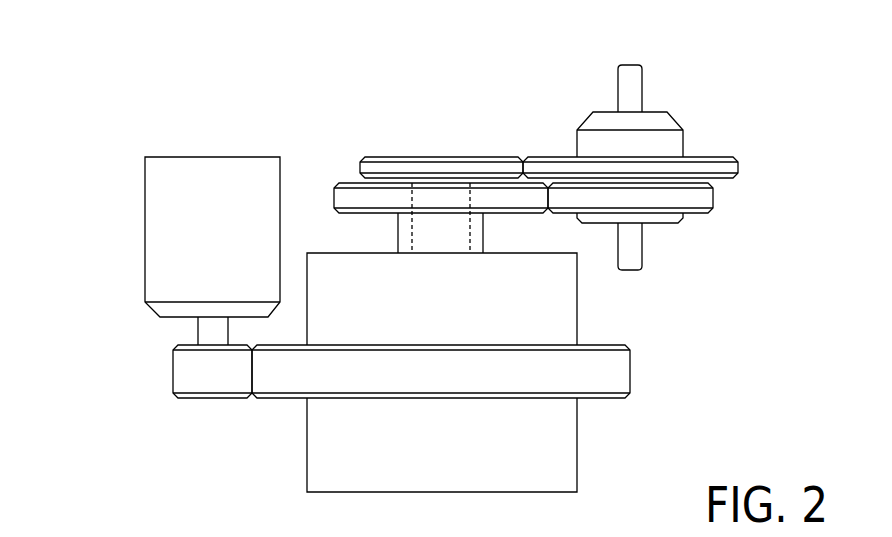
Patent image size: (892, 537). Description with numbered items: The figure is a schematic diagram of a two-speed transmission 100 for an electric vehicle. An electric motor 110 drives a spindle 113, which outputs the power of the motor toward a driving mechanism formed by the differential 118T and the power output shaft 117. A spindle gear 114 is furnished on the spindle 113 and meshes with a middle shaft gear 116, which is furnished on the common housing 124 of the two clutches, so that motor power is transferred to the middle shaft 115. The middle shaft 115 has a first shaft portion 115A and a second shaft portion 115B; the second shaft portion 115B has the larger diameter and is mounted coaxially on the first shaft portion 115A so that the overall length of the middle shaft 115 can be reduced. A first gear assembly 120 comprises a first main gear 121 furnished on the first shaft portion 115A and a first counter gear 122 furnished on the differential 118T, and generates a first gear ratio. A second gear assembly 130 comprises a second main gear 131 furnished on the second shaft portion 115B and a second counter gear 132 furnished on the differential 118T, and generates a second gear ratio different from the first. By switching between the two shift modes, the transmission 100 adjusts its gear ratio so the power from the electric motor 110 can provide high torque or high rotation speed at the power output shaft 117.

The two-speed transmission 100 is at (67, 37).
The electric motor 110 is at (177, 235).
The spindle 113 is at (210, 331).
The spindle gear 114 is at (185, 375).
The middle shaft gear 116 is at (280, 378).
The common housing 124 is at (335, 455).
The middle shaft 115 is at (413, 116).
The first shaft portion 115A is at (398, 220).
The second shaft portion 115B is at (398, 235).
The first gear assembly 120 is at (530, 116).
The first main gear 121 is at (452, 173).
The first counter gear 122 is at (535, 168).
The second gear assembly 130 is at (557, 54).
The second main gear 131 is at (427, 197).
The second counter gear 132 is at (570, 197).
The differential 118T is at (655, 122).
The power output shaft 117 is at (632, 243).